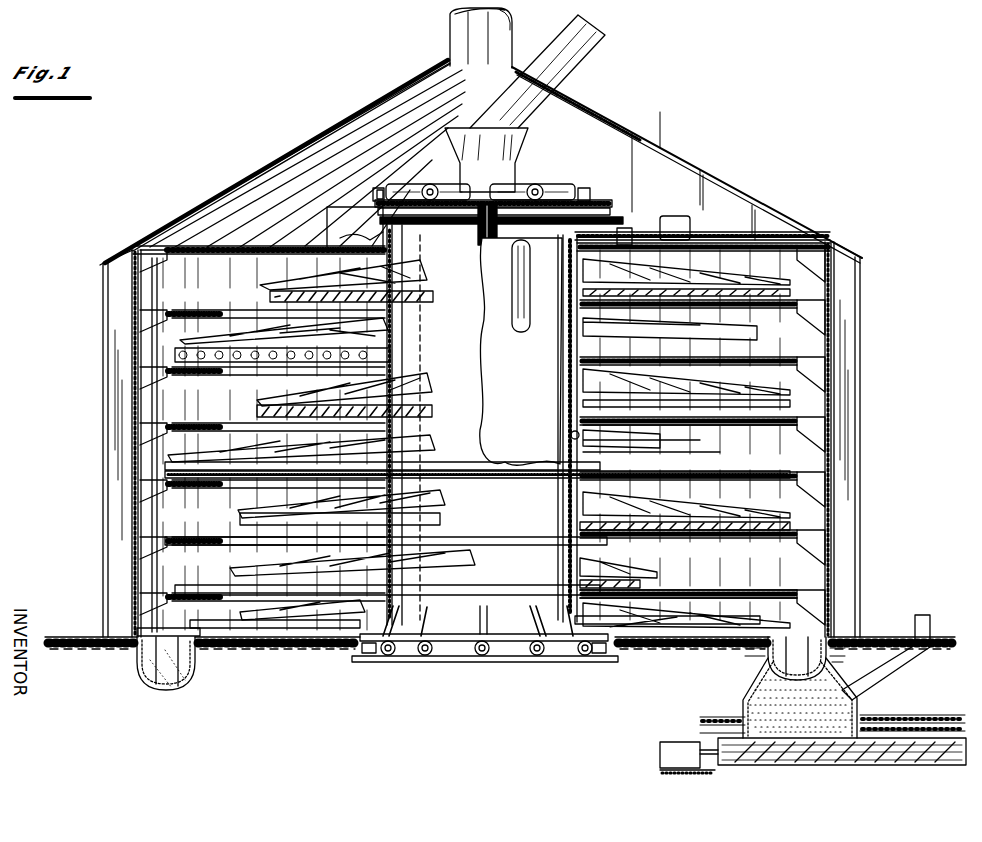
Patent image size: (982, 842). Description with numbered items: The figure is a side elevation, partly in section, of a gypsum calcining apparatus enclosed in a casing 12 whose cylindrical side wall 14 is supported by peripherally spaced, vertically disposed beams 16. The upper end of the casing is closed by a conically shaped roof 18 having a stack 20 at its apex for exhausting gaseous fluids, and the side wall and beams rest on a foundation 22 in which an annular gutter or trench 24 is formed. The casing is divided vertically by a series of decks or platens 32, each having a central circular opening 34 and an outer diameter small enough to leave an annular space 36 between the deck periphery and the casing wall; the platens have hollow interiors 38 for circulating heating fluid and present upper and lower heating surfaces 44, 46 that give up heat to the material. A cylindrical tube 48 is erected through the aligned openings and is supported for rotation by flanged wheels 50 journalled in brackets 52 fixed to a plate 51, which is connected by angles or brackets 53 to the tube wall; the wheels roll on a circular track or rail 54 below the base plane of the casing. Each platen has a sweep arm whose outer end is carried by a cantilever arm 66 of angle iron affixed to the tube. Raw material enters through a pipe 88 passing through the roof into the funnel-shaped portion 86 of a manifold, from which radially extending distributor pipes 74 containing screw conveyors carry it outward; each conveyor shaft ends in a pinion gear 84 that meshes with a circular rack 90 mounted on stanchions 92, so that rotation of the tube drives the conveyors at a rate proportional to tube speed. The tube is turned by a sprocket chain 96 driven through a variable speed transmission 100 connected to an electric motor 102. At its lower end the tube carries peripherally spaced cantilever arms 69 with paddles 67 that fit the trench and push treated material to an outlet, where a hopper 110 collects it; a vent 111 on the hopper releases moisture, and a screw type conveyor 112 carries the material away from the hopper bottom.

The casing 12 is at (238, 215).
The cylindrical side wall 14 is at (118, 408).
The vertically disposed beams 16 is at (118, 528).
The conically shaped roof 18 is at (755, 203).
The stack 20 is at (462, 32).
The foundation 22 is at (74, 637).
The annular gutter or trench 24 is at (190, 672).
The decks or platens 32 is at (214, 266).
The central circular openings 34 is at (582, 436).
The annular space 36 is at (150, 253).
The hollow interiors 38 is at (706, 590).
The upper heating surface 44 is at (700, 418).
The lower heating surface 46 is at (672, 426).
The cylindrical tube 48 is at (574, 380).
The flanged wheels 50 is at (425, 656).
The plate 51 is at (466, 632).
The brackets 52 is at (494, 656).
The angles or brackets 53 is at (497, 626).
The circular track or rail 54 is at (555, 658).
The cantilever arm 66 is at (255, 512).
The paddles 67 is at (178, 686).
The cantilever arms 69 is at (270, 628).
The distributor pipe 74 is at (418, 185).
The pinion gear 84 is at (378, 190).
The funnel-shaped portion 86 is at (524, 148).
The pipe 88 is at (585, 58).
The circular rack 90 is at (376, 196).
The stanchions 92 is at (327, 223).
The sprocket chain 96 is at (405, 225).
The variable speed transmission 100 is at (620, 236).
The electric motor 102 is at (684, 228).
The hopper 110 is at (745, 705).
The vent 111 is at (930, 625).
The screw type conveyor 112 is at (912, 735).